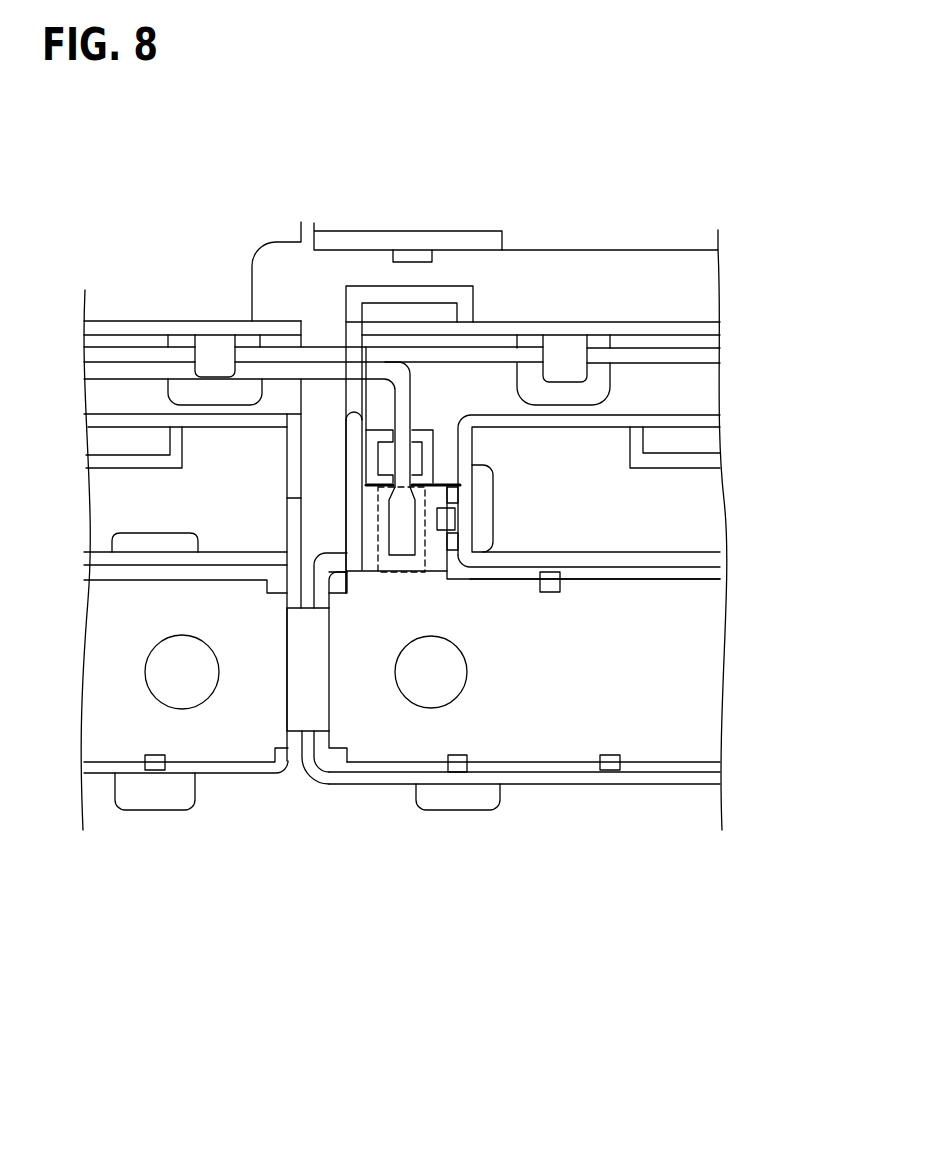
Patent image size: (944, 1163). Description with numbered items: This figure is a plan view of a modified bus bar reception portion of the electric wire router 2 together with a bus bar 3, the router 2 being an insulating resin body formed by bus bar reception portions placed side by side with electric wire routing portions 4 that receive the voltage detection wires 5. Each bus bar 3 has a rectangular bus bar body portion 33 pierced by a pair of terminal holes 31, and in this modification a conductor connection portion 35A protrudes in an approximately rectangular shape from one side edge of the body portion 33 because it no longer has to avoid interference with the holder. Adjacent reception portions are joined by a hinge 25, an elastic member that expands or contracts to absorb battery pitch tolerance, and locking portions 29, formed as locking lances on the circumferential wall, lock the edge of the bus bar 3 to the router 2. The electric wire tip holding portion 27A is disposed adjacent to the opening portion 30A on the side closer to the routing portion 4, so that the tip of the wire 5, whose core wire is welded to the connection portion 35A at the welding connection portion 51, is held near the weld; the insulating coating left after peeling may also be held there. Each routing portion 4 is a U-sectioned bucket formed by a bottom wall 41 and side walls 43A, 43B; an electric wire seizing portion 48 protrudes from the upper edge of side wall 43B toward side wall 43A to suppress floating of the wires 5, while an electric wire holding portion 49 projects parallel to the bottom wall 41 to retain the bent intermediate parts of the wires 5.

The electric wire router 2 is at (634, 802).
The bus bar 3 is at (122, 722).
The electric wire routing portion 4 is at (118, 392).
The voltage detection wire 5 is at (128, 358).
The hinge 25 is at (300, 655).
The electric wire tip holding portion 27A is at (443, 476).
The locking portion 29 is at (445, 517).
The opening portion 30A is at (403, 577).
The terminal hole 31 is at (212, 673).
The bus bar body portion 33 is at (578, 712).
The conductor connection portion 35A is at (373, 523).
The bottom wall 41 is at (438, 392).
The side wall 43A is at (222, 422).
The side wall 43B is at (222, 325).
The electric wire seizing portion 48 is at (565, 350).
The electric wire holding portion 49 is at (200, 357).
The welding connection portion 51 is at (352, 560).